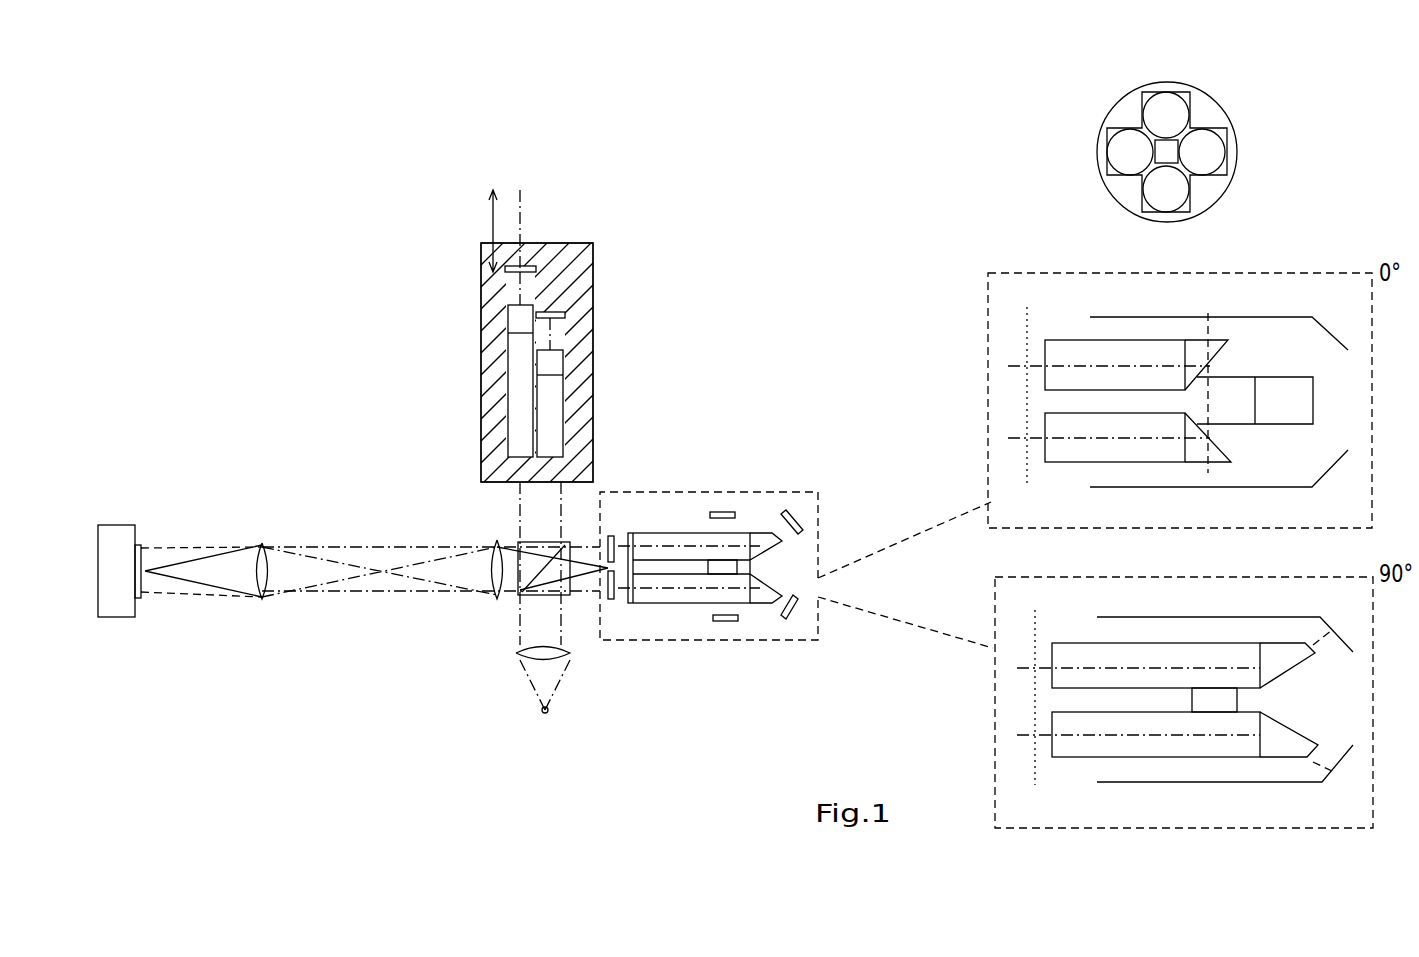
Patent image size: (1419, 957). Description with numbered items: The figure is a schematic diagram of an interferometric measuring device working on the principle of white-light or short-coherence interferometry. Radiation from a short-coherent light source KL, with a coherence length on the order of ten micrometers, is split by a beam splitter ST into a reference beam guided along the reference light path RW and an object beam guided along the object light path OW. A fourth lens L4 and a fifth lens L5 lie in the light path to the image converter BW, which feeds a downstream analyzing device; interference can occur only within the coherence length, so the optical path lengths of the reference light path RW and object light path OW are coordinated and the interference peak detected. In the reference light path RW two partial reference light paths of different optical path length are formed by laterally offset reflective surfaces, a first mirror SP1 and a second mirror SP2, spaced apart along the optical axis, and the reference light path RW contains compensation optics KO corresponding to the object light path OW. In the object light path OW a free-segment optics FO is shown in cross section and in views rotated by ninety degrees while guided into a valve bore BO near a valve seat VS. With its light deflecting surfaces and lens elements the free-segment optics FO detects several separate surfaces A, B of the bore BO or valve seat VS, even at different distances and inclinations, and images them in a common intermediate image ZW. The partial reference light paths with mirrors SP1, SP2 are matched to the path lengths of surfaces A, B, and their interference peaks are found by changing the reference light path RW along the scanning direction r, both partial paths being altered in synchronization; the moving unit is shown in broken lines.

The image converter BW is at (142, 540).
The fifth lens L5 is at (423, 554).
The fourth lens L4 is at (544, 554).
The beam splitter ST is at (517, 597).
The short-coherent light source KL is at (540, 712).
The compensation optics KO is at (480, 420).
The reference light path RW is at (470, 335).
The first mirror SP1 is at (578, 290).
The second mirror SP2 is at (525, 258).
The scanning direction r is at (484, 231).
The intermediate image ZW is at (614, 530).
The object light path OW is at (628, 641).
The surface A is at (722, 510).
The surface B is at (795, 512).
The free-segment optics FO is at (673, 605).
The valve bore BO is at (1258, 325).
The valve seat VS is at (1335, 332).